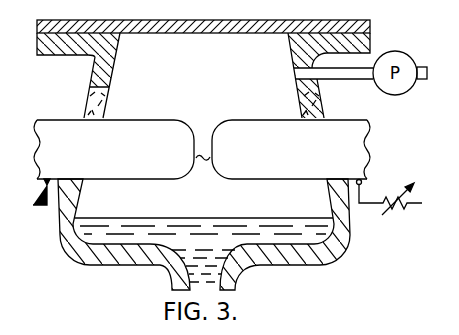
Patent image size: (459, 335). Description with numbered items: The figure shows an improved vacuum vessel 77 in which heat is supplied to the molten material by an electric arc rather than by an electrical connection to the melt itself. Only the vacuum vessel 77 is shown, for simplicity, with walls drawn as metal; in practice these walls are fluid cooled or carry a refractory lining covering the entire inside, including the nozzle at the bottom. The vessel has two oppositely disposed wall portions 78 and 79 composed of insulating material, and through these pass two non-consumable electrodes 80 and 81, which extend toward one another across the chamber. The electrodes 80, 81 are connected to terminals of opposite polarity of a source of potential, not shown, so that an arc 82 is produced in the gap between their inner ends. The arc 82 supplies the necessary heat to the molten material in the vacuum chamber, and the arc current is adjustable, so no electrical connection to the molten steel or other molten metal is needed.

The vacuum vessel 77 is at (72, 49).
The wall portion 78 is at (104, 103).
The wall portion 79 is at (300, 100).
The non-consumable electrode 80 is at (166, 180).
The non-consumable electrode 81 is at (253, 180).
The arc 82 is at (201, 161).